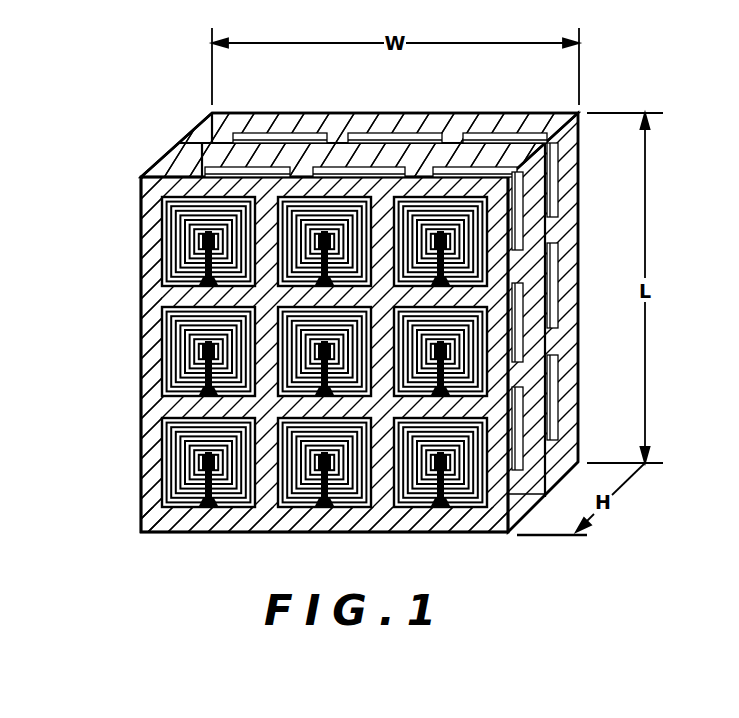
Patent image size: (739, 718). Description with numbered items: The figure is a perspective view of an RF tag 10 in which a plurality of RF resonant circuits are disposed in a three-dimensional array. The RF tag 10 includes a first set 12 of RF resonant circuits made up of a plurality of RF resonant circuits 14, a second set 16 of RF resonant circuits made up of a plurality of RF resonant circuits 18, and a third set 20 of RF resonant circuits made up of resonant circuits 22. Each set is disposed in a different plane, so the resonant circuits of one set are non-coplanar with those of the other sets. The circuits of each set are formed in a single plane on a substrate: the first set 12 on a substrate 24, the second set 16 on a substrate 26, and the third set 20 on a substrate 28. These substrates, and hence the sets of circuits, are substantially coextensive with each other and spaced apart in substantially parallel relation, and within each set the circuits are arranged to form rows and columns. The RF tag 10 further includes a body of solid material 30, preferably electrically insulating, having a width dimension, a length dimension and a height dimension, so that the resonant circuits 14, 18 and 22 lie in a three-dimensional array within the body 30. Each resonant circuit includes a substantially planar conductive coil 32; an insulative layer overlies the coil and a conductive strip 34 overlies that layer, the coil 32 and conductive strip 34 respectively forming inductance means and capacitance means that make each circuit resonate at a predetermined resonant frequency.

The RF tag 10 is at (90, 30).
The first set of RF resonant circuits 12 is at (142, 311).
The RF resonant circuits 14 is at (173, 197).
The second set of RF resonant circuits 16 is at (176, 160).
The RF resonant circuits 18 is at (203, 168).
The third set of RF resonant circuits 20 is at (208, 117).
The resonant circuits 22 is at (277, 135).
The substrate 24 is at (148, 355).
The substrate 26 is at (177, 145).
The substrate 28 is at (245, 131).
The body of solid material 30 is at (193, 523).
The coil 32 is at (163, 220).
The conductive strip 34 is at (205, 258).